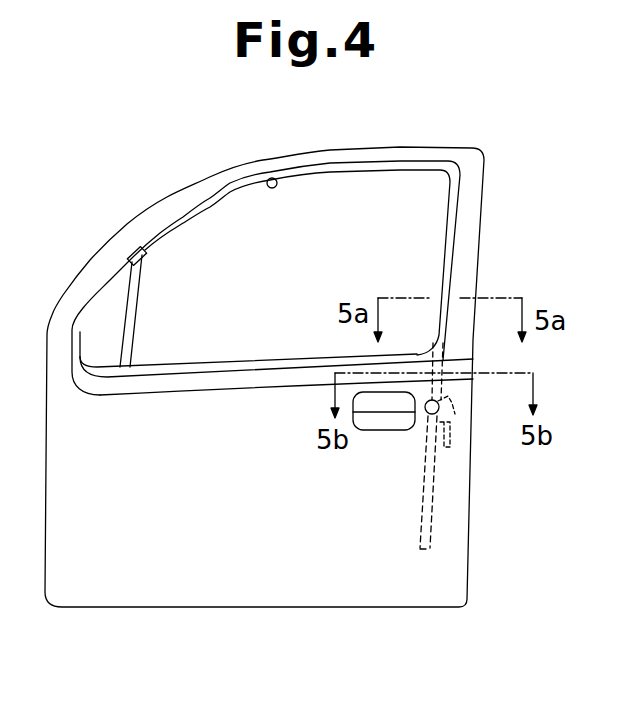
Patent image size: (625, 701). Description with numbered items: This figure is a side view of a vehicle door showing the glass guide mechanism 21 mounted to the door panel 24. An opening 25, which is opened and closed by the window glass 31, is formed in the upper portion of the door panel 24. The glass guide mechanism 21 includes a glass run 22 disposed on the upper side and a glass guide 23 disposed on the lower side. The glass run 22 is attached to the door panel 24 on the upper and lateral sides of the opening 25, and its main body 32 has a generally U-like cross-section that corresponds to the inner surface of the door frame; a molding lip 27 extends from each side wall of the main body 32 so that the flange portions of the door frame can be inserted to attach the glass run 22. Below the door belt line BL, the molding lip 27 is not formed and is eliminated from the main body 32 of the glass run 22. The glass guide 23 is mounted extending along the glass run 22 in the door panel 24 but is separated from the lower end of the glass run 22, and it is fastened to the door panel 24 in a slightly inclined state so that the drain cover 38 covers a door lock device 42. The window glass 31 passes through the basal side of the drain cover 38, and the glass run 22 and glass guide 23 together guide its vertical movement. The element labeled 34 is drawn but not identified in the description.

The glass guide mechanism 21 is at (580, 173).
The glass run 22 is at (448, 241).
The glass guide 23 is at (440, 503).
The door panel 24 is at (167, 577).
The opening 25 is at (270, 178).
The molding lip 27 is at (443, 278).
The window glass 31 is at (358, 193).
The main body 32 is at (452, 362).
The guide rail 34 is at (428, 483).
The drain cover 38 is at (456, 410).
The door lock device 42 is at (462, 440).
The door belt line BL is at (214, 373).